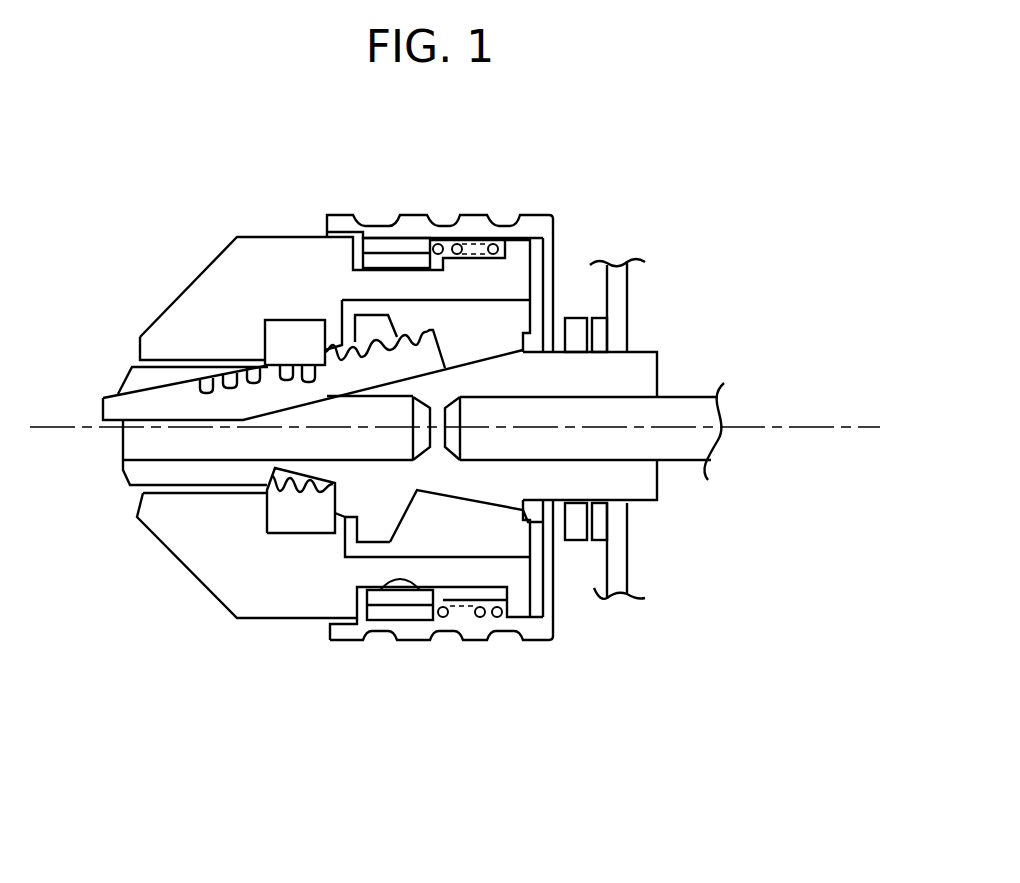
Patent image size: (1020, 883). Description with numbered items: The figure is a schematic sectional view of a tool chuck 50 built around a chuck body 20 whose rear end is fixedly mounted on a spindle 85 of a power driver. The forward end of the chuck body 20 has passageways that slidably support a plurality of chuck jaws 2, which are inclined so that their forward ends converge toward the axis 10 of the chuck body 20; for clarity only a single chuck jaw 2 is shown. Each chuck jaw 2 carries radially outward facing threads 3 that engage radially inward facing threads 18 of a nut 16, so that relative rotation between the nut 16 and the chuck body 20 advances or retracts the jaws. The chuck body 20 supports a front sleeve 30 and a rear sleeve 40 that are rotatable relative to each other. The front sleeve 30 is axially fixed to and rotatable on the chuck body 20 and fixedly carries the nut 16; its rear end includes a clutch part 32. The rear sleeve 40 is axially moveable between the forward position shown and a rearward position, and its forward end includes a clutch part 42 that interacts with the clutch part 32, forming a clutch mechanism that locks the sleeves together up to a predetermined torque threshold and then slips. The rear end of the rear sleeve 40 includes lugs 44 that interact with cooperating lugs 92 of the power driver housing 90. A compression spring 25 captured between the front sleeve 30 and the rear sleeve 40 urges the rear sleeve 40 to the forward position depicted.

The chuck jaws 2 is at (117, 390).
The radially outward facing threads 3 is at (280, 362).
The axis 10 is at (827, 427).
The nut 16 is at (310, 372).
The radially inward facing threads 18 is at (272, 322).
The chuck body 20 is at (408, 508).
The compression spring 25 is at (496, 245).
The front sleeve 30 is at (207, 593).
The clutch part 32 is at (470, 600).
The rear sleeve 40 is at (543, 642).
The clutch part 42 is at (412, 592).
The lugs 44 is at (580, 315).
The tool chuck 50 is at (208, 762).
The spindle 85 is at (690, 397).
The power driver housing 90 is at (628, 293).
The cooperating lugs 92 is at (615, 270).